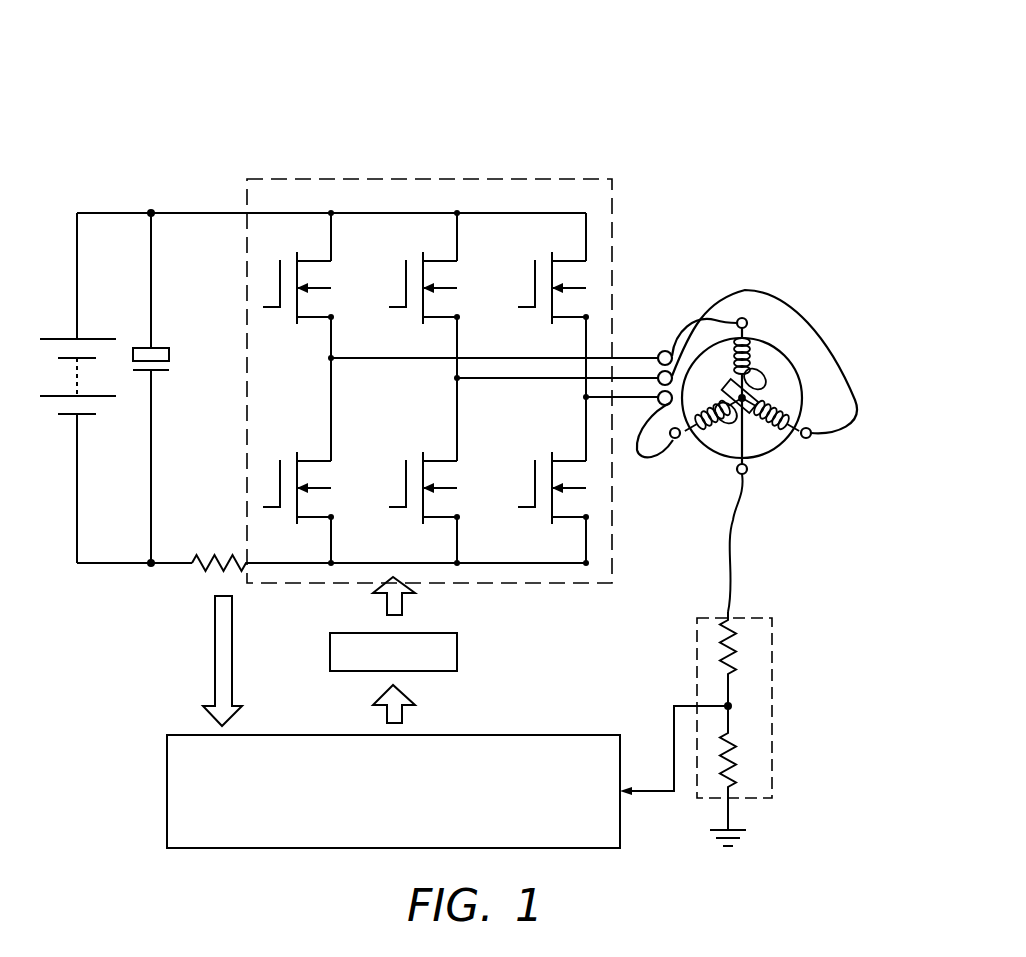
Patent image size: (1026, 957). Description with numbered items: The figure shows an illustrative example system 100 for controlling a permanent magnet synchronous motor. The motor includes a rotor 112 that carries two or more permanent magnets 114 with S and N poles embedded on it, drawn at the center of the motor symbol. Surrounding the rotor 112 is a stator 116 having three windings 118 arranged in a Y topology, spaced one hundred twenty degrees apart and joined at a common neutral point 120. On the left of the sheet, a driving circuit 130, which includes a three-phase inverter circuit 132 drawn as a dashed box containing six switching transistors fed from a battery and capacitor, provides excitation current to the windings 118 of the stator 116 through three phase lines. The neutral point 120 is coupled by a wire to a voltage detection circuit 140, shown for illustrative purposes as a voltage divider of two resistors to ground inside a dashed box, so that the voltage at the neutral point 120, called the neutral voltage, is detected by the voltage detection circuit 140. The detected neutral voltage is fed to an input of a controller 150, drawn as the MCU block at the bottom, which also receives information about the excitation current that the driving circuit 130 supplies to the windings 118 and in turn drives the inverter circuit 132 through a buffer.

The system 100 is at (684, 84).
The rotor 112 is at (740, 415).
The permanent magnets 114 is at (742, 420).
The stator 116 is at (788, 358).
The windings 118 is at (785, 442).
The neutral point 120 is at (706, 543).
The driving circuit 130 is at (146, 168).
The three-phase inverter circuit 132 is at (432, 178).
The voltage detection circuit 140 is at (772, 710).
The controller 150 is at (500, 735).